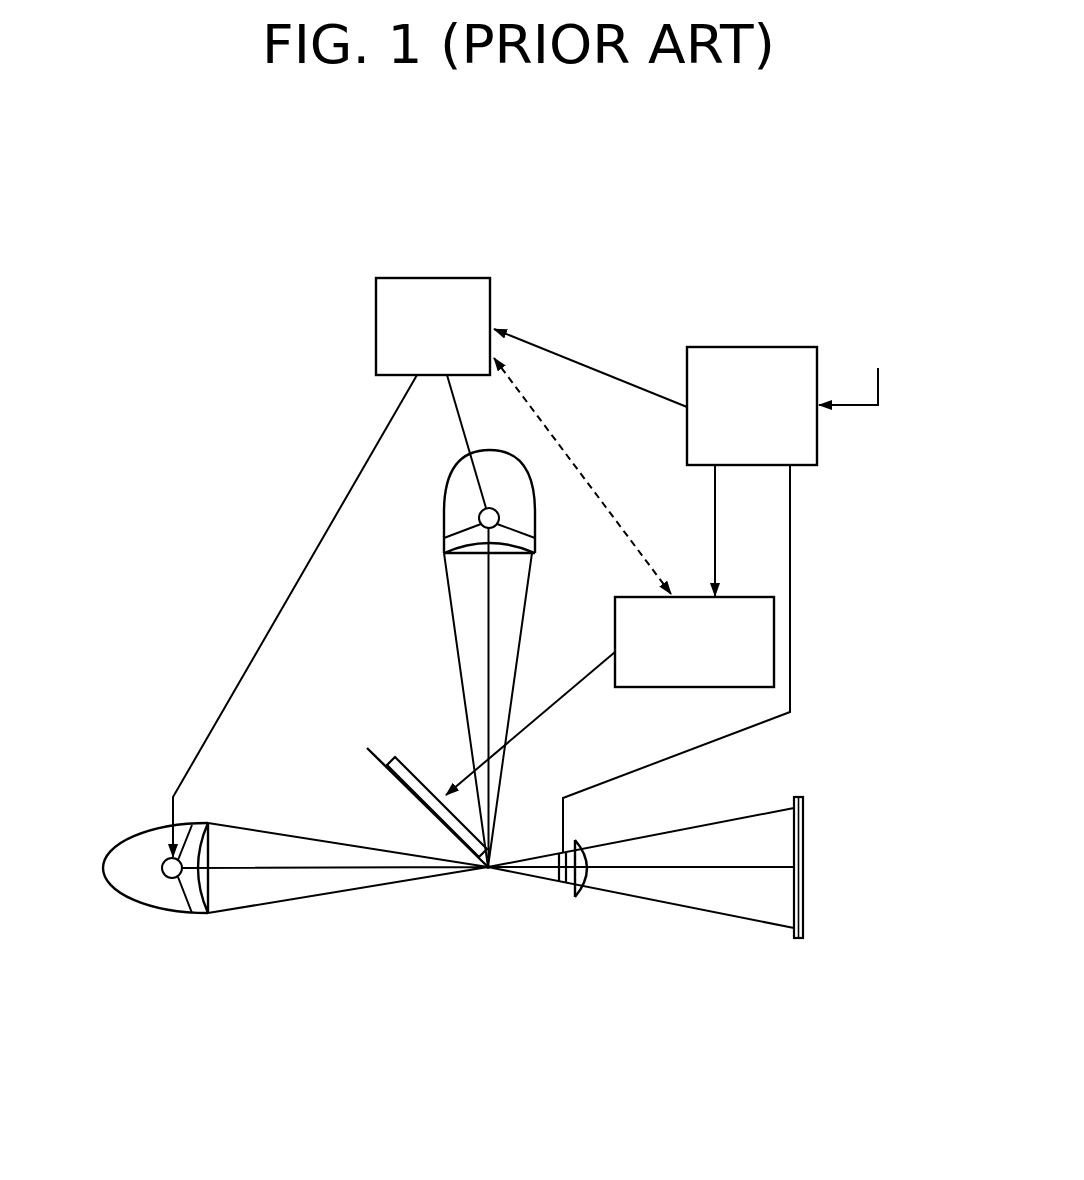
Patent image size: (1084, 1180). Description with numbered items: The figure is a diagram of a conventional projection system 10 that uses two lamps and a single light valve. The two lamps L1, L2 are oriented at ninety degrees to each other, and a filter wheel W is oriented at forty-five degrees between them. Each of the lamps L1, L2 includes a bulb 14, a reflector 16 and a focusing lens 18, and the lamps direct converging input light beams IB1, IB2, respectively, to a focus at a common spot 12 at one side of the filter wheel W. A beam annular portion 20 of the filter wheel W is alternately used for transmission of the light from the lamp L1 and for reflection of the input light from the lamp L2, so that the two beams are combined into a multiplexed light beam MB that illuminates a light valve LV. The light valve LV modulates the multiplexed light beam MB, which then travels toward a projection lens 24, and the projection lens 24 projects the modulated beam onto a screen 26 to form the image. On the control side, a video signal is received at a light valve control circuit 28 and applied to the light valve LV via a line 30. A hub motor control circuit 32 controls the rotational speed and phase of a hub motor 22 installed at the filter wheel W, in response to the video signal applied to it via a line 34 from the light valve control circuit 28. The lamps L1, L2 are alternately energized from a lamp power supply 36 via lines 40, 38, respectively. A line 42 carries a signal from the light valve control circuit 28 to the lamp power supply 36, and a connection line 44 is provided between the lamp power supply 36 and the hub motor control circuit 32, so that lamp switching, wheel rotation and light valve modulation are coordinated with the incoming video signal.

The conventional projection system 10 is at (573, 596).
The common spot 12 is at (483, 875).
The bulb 14 is at (480, 512).
The reflector 16 is at (443, 526).
The focusing lens 18 is at (460, 557).
The beam annular portion 20 is at (379, 746).
The hub motor 22 is at (416, 771).
The projection lens 24 is at (586, 899).
The screen 26 is at (811, 817).
The light valve control circuit 28 is at (790, 346).
The line 30 is at (793, 515).
The hub motor control circuit 32 is at (752, 596).
The line 34 is at (713, 515).
The lamp power supply 36 is at (376, 329).
The line 38 is at (458, 420).
The line 40 is at (298, 618).
The line 42 is at (578, 362).
The connection line 44 is at (603, 497).
The lamp L1 is at (143, 920).
The lamp L2 is at (497, 446).
The input light beam IB1 is at (285, 848).
The input light beam IB2 is at (508, 651).
The filter wheel W is at (374, 766).
The multiplexed light beam MB is at (525, 876).
The light valve LV is at (555, 888).